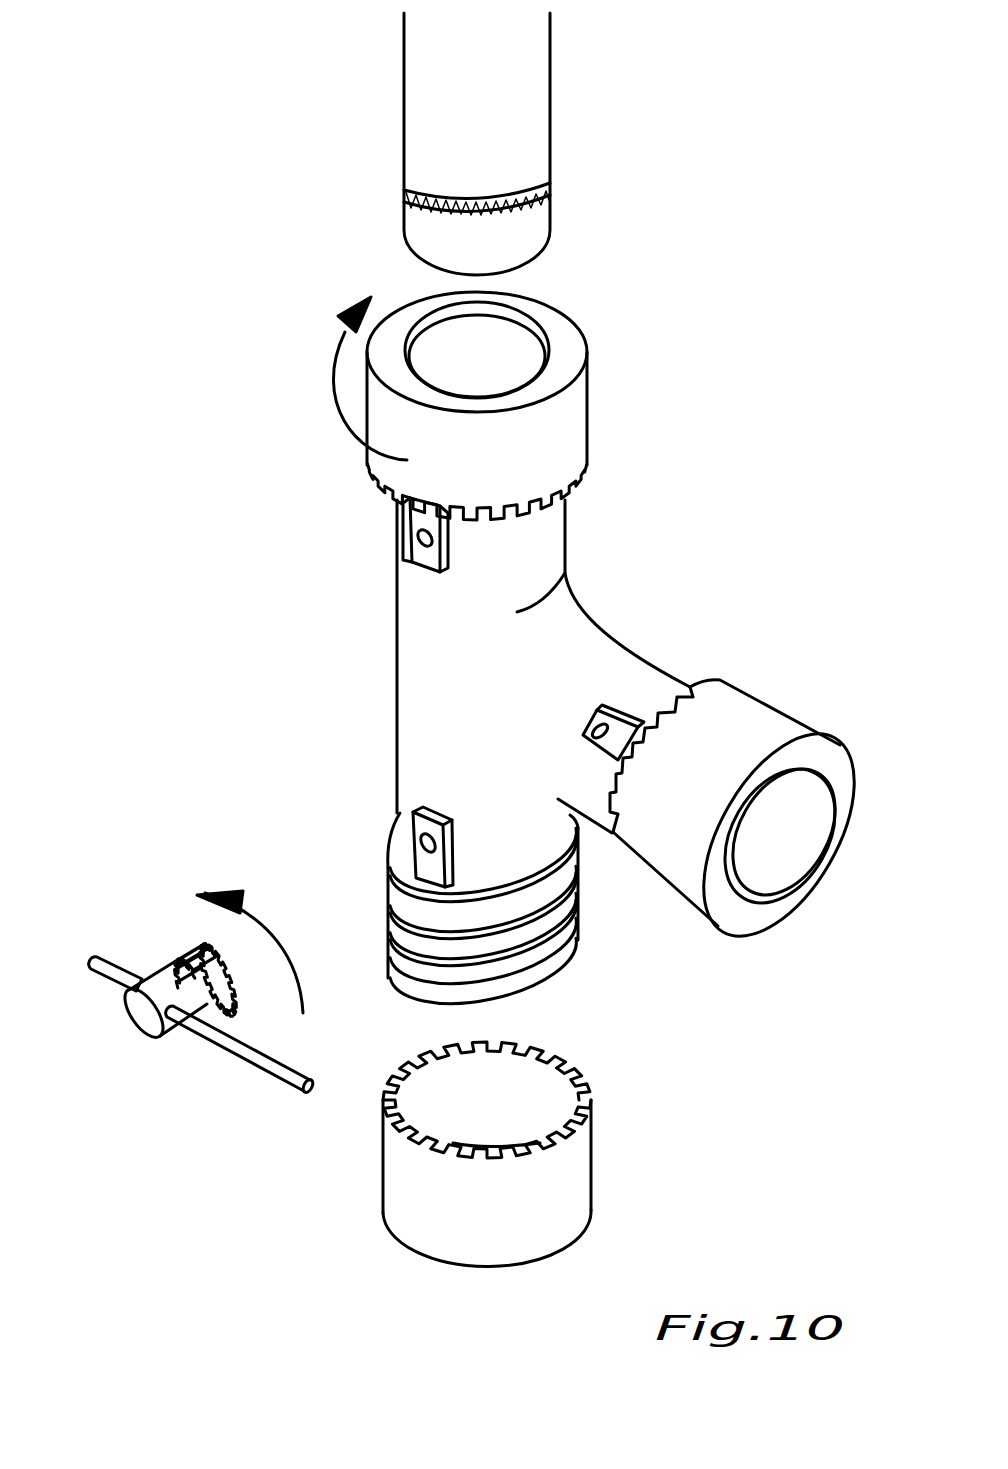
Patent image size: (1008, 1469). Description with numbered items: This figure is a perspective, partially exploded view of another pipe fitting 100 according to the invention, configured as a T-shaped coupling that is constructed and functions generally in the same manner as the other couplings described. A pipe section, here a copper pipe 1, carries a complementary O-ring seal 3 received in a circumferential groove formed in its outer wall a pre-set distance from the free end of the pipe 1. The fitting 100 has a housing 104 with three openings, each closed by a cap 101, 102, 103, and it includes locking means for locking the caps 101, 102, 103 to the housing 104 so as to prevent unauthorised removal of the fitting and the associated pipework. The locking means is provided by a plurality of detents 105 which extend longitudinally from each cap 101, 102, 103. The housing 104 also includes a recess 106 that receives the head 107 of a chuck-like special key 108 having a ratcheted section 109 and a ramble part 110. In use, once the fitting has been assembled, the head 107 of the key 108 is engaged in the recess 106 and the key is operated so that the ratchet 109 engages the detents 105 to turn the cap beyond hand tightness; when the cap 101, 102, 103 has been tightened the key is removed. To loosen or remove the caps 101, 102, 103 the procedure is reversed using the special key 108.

The copper pipe 1 is at (547, 118).
The O-ring seal 3 is at (545, 199).
The pipe fitting 100 is at (832, 418).
The cap 101 is at (591, 1203).
The cap 102 is at (773, 710).
The cap 103 is at (586, 421).
The housing 104 is at (397, 667).
The detents 105 is at (548, 1039).
The recess 106 is at (418, 845).
The head 107 is at (230, 961).
The special key 108 is at (148, 1023).
The ratcheted section 109 is at (195, 945).
The ramble part 110 is at (238, 1052).